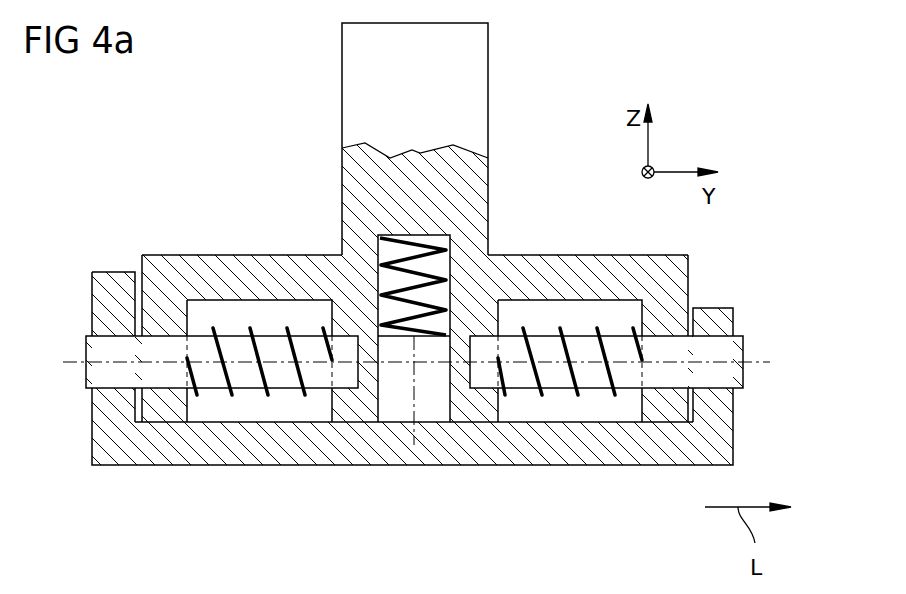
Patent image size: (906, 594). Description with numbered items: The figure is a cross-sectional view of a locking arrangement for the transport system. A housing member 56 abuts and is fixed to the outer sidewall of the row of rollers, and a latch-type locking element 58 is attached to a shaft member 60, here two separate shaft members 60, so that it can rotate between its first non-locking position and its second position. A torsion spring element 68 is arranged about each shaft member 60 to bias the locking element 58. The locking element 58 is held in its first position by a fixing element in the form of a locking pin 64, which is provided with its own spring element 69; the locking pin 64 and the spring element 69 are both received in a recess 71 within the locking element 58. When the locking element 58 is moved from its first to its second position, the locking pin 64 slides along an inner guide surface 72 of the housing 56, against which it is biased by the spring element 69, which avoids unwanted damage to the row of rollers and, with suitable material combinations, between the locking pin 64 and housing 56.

The housing member 56 is at (723, 423).
The locking element 58 is at (477, 103).
The shaft member 60 is at (87, 373).
The locking pin 64 is at (430, 408).
The torsion spring element 68 is at (268, 390).
The spring element 69 is at (425, 242).
The recess 71 is at (362, 252).
The inner guide surface 72 is at (388, 423).